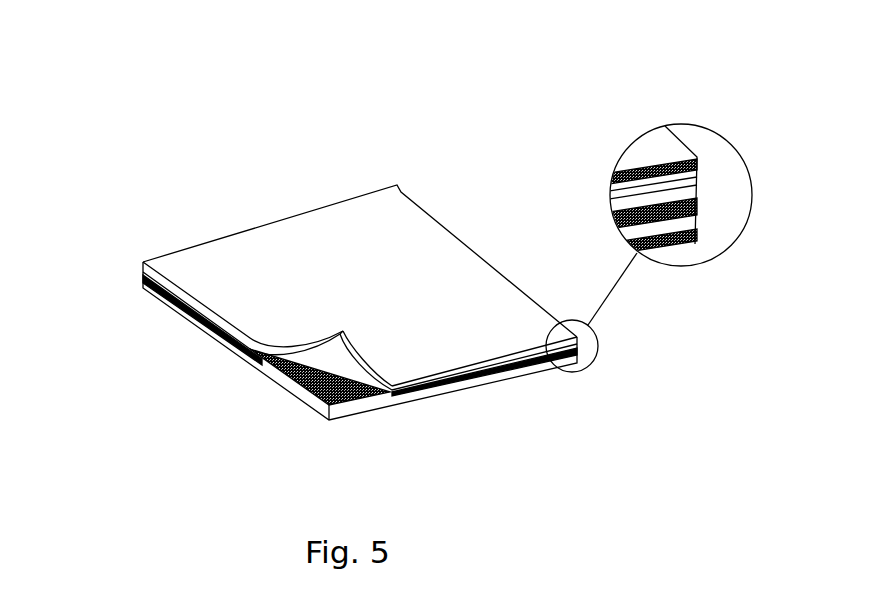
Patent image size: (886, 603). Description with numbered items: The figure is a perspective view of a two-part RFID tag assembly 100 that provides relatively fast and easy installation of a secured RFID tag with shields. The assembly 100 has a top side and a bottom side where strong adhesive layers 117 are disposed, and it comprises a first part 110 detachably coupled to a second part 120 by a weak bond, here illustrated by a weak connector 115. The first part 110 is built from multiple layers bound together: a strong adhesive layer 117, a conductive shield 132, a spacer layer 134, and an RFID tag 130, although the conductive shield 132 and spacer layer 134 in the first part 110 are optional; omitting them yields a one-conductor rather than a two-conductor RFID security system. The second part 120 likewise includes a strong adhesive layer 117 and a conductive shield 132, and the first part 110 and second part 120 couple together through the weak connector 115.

The two-part RFID tag assembly 100 is at (168, 142).
The first part 110 is at (143, 262).
The weak connector 115 is at (368, 400).
The strong adhesive layer 117 is at (697, 160).
The second part 120 is at (143, 290).
The RFID tag 130 is at (697, 193).
The conductive shield 132 is at (697, 170).
The spacer layer 134 is at (697, 182).